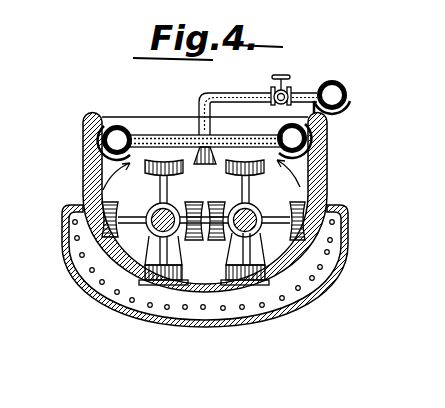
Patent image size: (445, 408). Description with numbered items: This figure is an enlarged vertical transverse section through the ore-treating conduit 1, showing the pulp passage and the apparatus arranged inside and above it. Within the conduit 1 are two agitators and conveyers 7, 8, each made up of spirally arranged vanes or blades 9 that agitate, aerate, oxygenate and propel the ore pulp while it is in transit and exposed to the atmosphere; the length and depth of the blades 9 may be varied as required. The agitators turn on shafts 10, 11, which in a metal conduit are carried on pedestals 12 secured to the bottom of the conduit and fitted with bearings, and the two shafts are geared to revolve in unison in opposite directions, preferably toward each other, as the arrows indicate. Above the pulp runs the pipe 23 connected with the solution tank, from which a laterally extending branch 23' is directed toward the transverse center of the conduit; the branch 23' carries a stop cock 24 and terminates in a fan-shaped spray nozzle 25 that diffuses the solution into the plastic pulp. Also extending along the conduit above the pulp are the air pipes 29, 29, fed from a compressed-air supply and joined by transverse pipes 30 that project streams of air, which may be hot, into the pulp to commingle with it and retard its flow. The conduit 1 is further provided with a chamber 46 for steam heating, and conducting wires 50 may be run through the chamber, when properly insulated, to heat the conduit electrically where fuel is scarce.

The conduit 1 is at (318, 155).
The agitator and conveyer 7 is at (146, 229).
The agitator and conveyer 8 is at (256, 231).
The vanes or blades 9 is at (156, 175).
The shaft 10 is at (162, 208).
The shaft 11 is at (212, 210).
The pedestals 12 is at (234, 255).
The pipe 23 is at (353, 95).
The branches 23' is at (258, 99).
The stop cock 24 is at (284, 79).
The spray nozzle 25 is at (202, 164).
The pipes 29 is at (112, 138).
The transverse pipes 30 is at (165, 134).
The chamber 46 is at (317, 257).
The conducting wires 50 is at (293, 310).